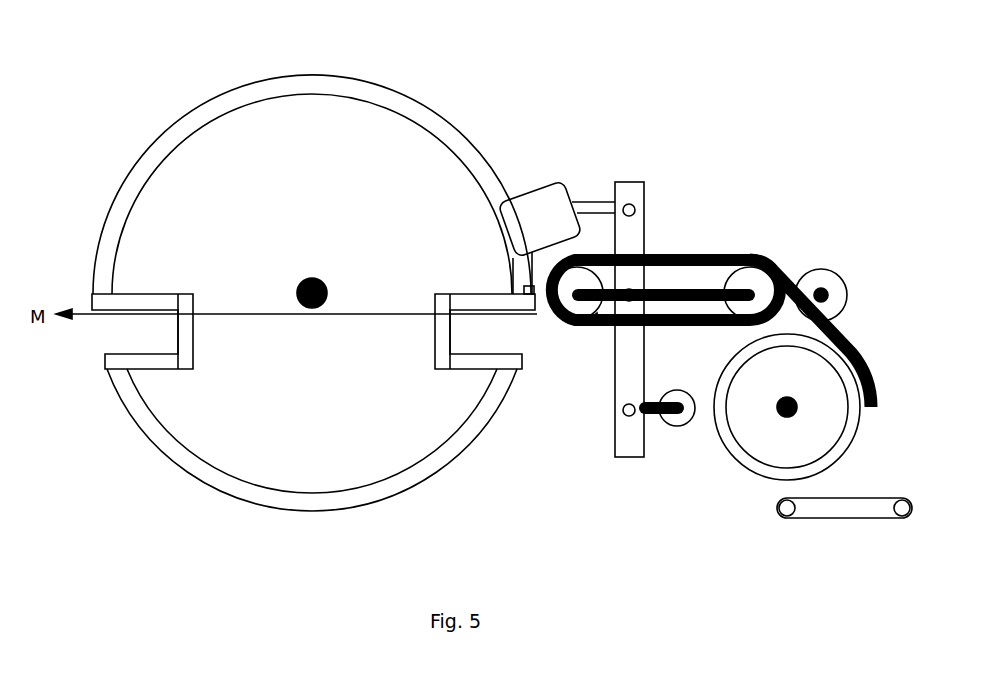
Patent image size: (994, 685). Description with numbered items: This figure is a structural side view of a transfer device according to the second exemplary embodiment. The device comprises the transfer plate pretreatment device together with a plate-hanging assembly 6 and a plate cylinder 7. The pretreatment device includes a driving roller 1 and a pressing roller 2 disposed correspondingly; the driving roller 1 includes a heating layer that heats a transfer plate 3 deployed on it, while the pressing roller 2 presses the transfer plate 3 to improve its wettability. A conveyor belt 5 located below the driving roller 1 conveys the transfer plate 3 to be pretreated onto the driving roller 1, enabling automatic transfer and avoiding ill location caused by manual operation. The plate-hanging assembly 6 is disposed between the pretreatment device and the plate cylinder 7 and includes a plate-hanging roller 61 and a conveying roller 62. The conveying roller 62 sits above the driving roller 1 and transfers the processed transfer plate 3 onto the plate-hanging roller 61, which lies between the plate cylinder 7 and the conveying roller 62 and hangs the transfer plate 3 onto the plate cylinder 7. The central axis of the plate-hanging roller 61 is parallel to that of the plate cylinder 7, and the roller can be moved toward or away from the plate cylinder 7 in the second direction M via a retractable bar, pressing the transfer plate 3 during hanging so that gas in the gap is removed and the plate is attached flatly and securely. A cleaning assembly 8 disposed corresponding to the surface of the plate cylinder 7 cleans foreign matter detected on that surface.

The driving roller 1 is at (851, 441).
The pressing roller 2 is at (681, 424).
The transfer plate 3 is at (703, 255).
The conveyor belt 5 is at (843, 505).
The plate-hanging assembly 6 is at (626, 208).
The plate-hanging roller 61 is at (537, 284).
The conveying roller 62 is at (760, 283).
The plate cylinder 7 is at (310, 86).
The cleaning assembly 8 is at (520, 223).